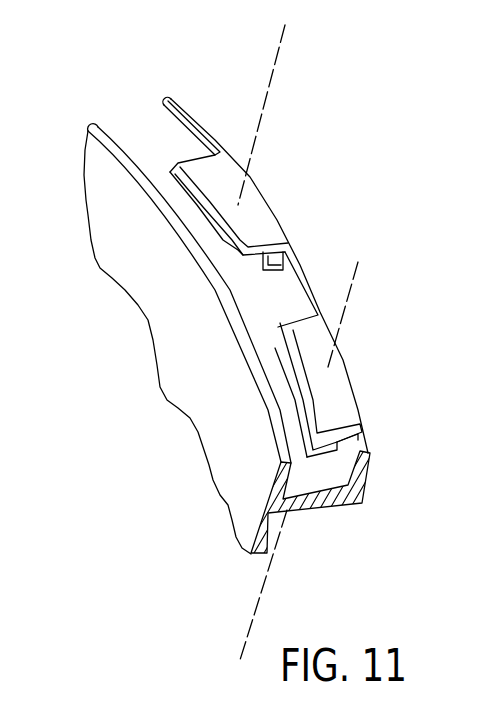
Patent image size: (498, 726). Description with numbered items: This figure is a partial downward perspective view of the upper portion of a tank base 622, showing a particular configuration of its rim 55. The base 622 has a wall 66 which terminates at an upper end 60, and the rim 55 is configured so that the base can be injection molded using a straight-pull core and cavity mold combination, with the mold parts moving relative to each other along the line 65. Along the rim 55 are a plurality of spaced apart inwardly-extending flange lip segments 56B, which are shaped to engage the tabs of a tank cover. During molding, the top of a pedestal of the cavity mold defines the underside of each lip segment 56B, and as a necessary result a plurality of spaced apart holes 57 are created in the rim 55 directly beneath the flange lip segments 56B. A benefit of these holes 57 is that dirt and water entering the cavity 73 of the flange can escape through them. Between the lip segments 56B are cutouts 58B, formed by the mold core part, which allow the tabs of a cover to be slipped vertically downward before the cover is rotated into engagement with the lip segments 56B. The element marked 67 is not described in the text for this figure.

The rim 55 is at (361, 379).
The flange lip segments 56B is at (257, 204).
The holes 57 is at (258, 265).
The cutouts 58B is at (175, 117).
The upper end 60 is at (97, 131).
The line 65 is at (283, 47).
The wall 66 is at (197, 417).
The bottom section 67 is at (303, 512).
The cavity 73 is at (137, 127).
The base 622 is at (197, 511).